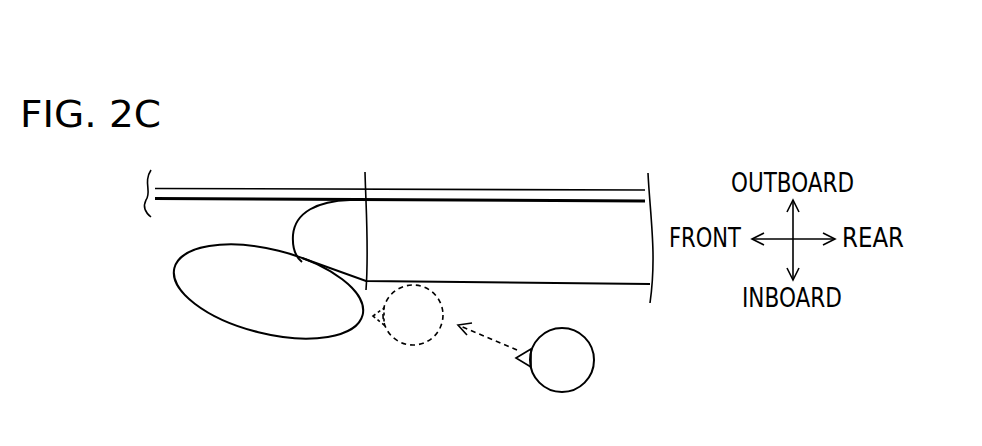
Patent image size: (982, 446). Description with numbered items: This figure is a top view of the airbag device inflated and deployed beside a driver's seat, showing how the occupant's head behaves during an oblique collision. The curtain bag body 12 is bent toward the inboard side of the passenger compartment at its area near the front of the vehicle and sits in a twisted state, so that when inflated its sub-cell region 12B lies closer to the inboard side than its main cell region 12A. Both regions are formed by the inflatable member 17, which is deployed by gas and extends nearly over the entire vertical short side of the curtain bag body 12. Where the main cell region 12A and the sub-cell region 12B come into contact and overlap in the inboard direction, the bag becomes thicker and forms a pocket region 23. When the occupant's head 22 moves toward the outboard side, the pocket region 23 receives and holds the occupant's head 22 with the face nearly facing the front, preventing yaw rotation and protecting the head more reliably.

The curtain bag body 12 is at (398, 242).
The main cell region 12A is at (482, 202).
The sub-cell region 12B is at (208, 316).
The inflatable member 17 is at (580, 215).
The occupant's head 22 is at (450, 307).
The pocket region 23 is at (362, 215).